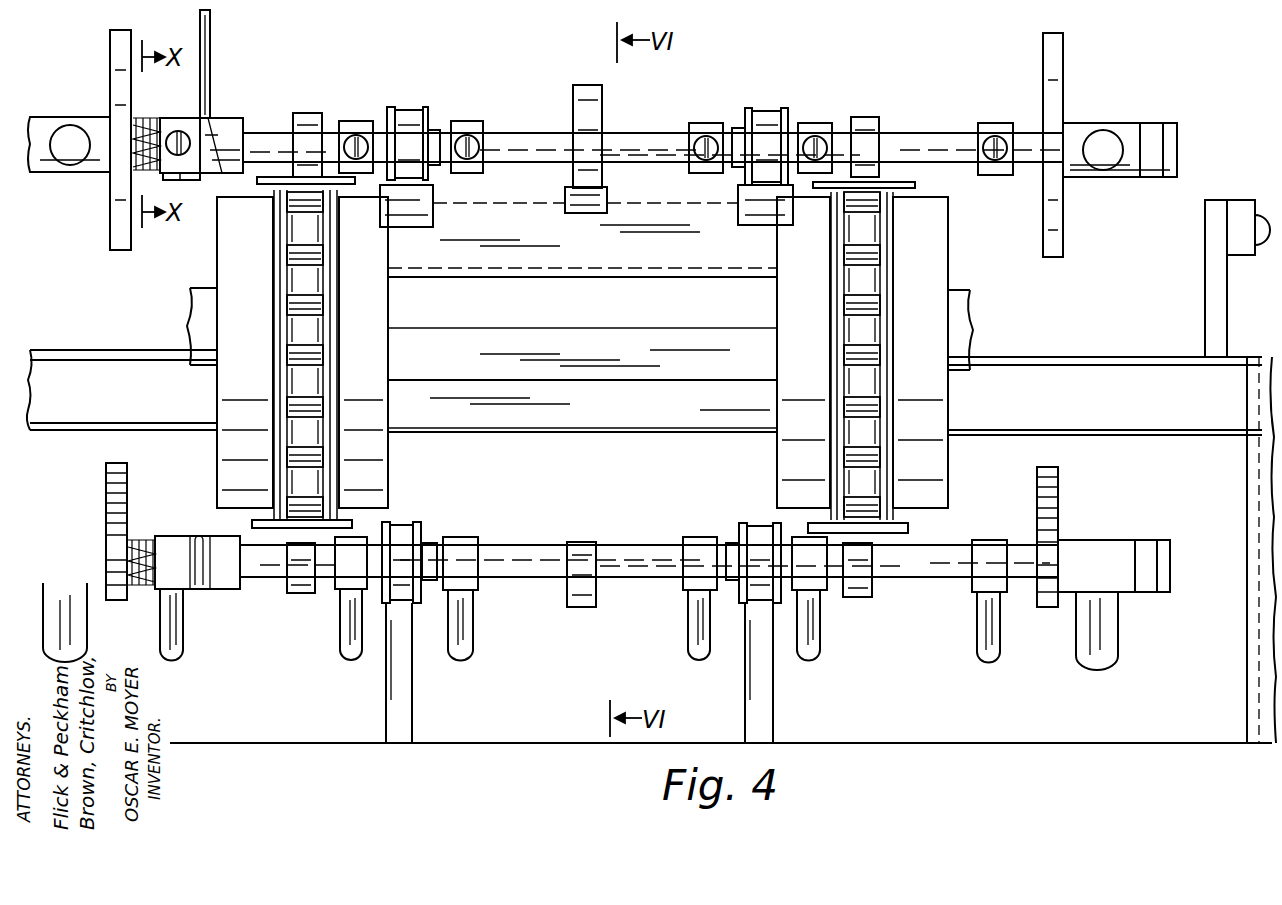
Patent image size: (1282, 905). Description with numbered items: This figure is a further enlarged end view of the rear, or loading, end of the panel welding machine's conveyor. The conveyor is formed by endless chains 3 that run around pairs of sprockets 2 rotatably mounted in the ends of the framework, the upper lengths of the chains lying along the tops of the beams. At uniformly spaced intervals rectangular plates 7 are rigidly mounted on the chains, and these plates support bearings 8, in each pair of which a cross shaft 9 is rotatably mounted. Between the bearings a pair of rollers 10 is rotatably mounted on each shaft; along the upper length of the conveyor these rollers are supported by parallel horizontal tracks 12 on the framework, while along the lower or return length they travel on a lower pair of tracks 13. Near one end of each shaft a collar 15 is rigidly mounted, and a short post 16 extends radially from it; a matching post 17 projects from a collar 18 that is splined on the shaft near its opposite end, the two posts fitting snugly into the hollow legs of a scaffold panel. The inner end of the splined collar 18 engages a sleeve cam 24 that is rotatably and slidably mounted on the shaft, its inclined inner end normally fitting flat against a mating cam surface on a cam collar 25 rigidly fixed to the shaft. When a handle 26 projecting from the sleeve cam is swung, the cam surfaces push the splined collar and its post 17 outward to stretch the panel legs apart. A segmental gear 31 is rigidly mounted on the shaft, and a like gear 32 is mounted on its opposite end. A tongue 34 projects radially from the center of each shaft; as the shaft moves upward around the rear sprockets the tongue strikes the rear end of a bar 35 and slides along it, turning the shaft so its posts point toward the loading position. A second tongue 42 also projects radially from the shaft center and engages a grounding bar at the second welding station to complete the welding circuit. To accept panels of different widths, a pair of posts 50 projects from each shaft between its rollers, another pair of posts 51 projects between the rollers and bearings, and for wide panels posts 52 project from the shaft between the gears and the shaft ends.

The sprockets 2 is at (296, 374).
The endless chains 3 is at (274, 221).
The rectangular plates 7 is at (257, 181).
The bearings 8 is at (304, 120).
The cross shaft 9 is at (622, 140).
The rollers 10 is at (408, 116).
The horizontal tracks 12 is at (432, 198).
The lower tracks 13 is at (406, 622).
The collar 15 is at (996, 124).
The post 16 is at (996, 156).
The post 17 is at (175, 138).
The splined collar 18 is at (188, 122).
The sleeve cam 24 is at (208, 125).
The cam collar 25 is at (240, 126).
The handle 26 is at (208, 45).
The segmental gear 31 is at (110, 190).
The segmental gear 32 is at (1063, 208).
The tongue 34 is at (606, 190).
The bar 35 is at (563, 194).
The second tongue 42 is at (576, 99).
The posts 50 is at (470, 132).
The posts 51 is at (358, 142).
The posts 52 is at (74, 130).